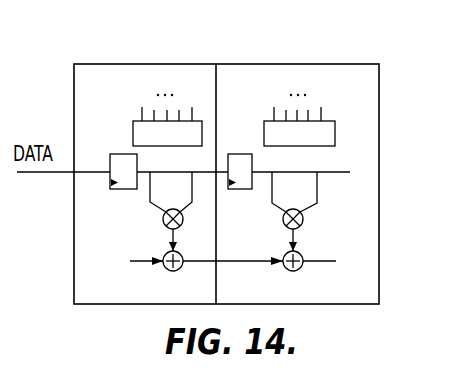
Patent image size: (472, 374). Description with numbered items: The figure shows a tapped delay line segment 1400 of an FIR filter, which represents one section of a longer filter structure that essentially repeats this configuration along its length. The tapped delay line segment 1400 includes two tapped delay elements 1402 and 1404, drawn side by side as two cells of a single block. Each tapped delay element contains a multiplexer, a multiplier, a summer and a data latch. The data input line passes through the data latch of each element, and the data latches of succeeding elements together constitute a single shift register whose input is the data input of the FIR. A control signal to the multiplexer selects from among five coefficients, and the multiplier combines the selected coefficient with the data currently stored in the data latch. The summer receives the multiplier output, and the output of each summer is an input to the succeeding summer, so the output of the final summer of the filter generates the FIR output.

The tapped delay line segment 1400 is at (104, 26).
The tapped delay element 1402 is at (152, 64).
The tapped delay element 1404 is at (331, 64).